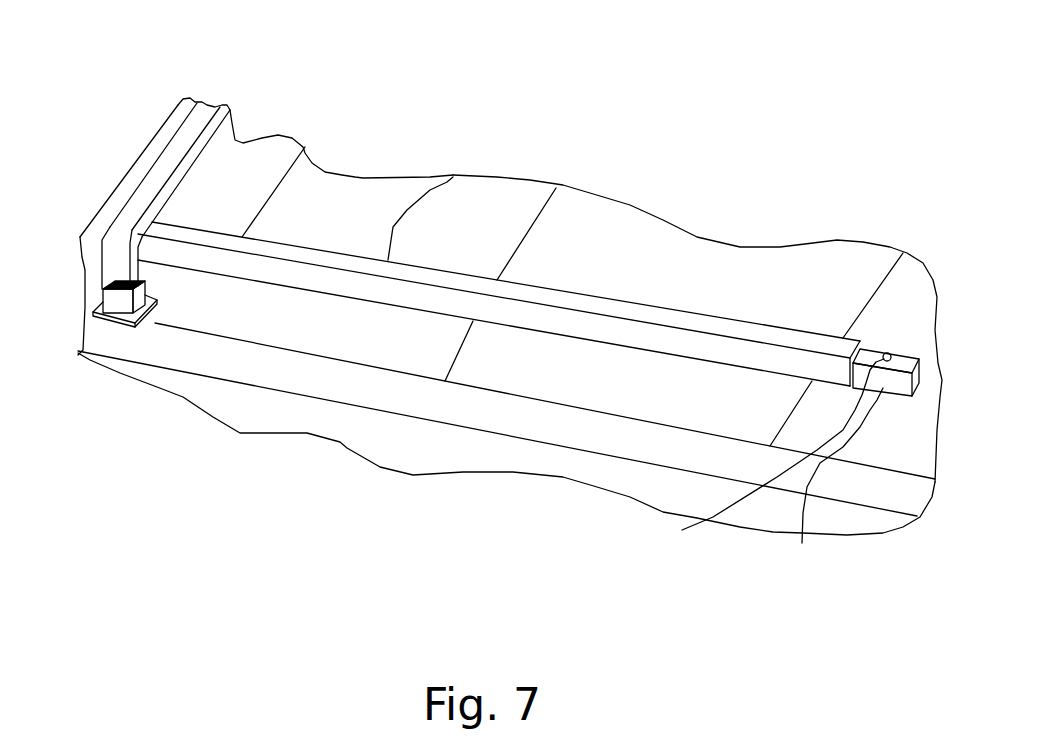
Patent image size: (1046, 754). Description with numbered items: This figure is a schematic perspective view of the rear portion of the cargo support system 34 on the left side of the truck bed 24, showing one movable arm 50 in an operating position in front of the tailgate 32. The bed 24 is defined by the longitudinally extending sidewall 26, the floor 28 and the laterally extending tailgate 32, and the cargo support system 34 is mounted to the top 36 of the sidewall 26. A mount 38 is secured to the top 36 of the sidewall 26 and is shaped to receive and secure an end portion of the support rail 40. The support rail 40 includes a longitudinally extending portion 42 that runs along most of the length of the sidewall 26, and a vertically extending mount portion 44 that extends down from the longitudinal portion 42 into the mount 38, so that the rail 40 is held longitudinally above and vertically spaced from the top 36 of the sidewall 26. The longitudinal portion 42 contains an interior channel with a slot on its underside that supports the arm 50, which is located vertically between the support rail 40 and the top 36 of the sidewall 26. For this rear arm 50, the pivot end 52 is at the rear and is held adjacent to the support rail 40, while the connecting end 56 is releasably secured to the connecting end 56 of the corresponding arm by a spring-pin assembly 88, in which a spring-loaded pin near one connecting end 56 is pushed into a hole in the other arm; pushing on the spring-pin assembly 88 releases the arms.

The bed 24 is at (510, 322).
The sidewall 26 is at (335, 111).
The floor 28 is at (561, 247).
The tailgate 32 is at (506, 418).
The cargo support system 34 is at (142, 235).
The top 36 is at (224, 188).
The mount 38 is at (133, 378).
The support rail 40 is at (155, 135).
The longitudinally extending portion 42 is at (100, 208).
The vertically extending mount portion 44 is at (100, 365).
The arm 50 is at (453, 176).
The pivot end 52 is at (499, 363).
The connecting end 56 is at (851, 466).
The spring-pin assembly 88 is at (762, 458).